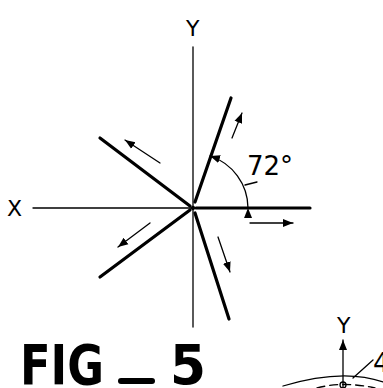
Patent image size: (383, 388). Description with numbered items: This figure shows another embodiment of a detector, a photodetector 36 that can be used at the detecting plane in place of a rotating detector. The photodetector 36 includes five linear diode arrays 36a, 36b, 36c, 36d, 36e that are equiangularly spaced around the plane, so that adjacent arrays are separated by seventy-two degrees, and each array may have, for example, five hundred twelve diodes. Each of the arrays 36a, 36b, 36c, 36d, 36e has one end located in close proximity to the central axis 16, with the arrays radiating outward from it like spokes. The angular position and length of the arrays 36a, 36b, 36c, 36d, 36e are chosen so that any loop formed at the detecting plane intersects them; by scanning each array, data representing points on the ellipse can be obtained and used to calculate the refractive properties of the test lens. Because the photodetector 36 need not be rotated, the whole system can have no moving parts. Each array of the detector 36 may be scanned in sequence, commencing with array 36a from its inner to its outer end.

The central axis 16 is at (182, 233).
The photodetector 36 is at (275, 110).
The linear diode array 36a is at (226, 110).
The linear diode array 36b is at (292, 206).
The linear diode array 36c is at (222, 297).
The linear diode array 36d is at (117, 267).
The linear diode array 36e is at (120, 153).